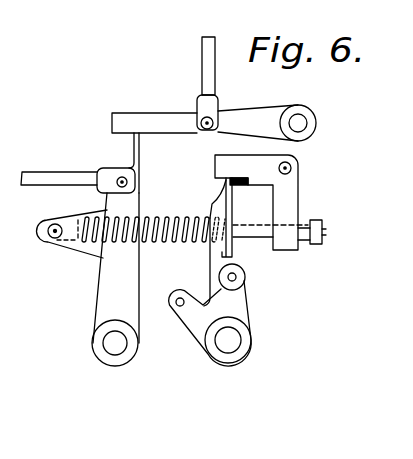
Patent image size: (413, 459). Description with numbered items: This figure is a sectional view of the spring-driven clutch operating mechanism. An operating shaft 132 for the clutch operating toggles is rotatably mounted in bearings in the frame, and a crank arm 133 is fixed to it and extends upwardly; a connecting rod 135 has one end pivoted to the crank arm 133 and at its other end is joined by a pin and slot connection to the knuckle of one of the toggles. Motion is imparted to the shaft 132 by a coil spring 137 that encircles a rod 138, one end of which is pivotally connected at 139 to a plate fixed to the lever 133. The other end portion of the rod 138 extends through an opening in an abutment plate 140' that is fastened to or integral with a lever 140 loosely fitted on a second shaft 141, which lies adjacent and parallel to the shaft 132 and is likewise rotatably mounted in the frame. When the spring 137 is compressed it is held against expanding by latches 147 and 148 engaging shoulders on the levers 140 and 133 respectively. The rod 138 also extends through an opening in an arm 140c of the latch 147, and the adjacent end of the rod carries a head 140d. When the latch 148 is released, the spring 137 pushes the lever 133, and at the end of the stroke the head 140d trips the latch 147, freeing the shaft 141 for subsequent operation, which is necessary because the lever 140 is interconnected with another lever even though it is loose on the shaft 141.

The latch 148 is at (140, 123).
The connecting rod 135 is at (63, 162).
The crank arm 133 is at (107, 300).
The operating shaft 132 is at (113, 349).
The pivotal connection 139 is at (50, 242).
The coil spring 137 is at (164, 243).
The rod 138 is at (151, 218).
The abutment plate 140' is at (200, 199).
The latch 147 is at (296, 205).
The lever 140 is at (259, 234).
The arm of the latch 140c is at (296, 222).
The head 140d is at (323, 238).
The second shaft 141 is at (236, 339).